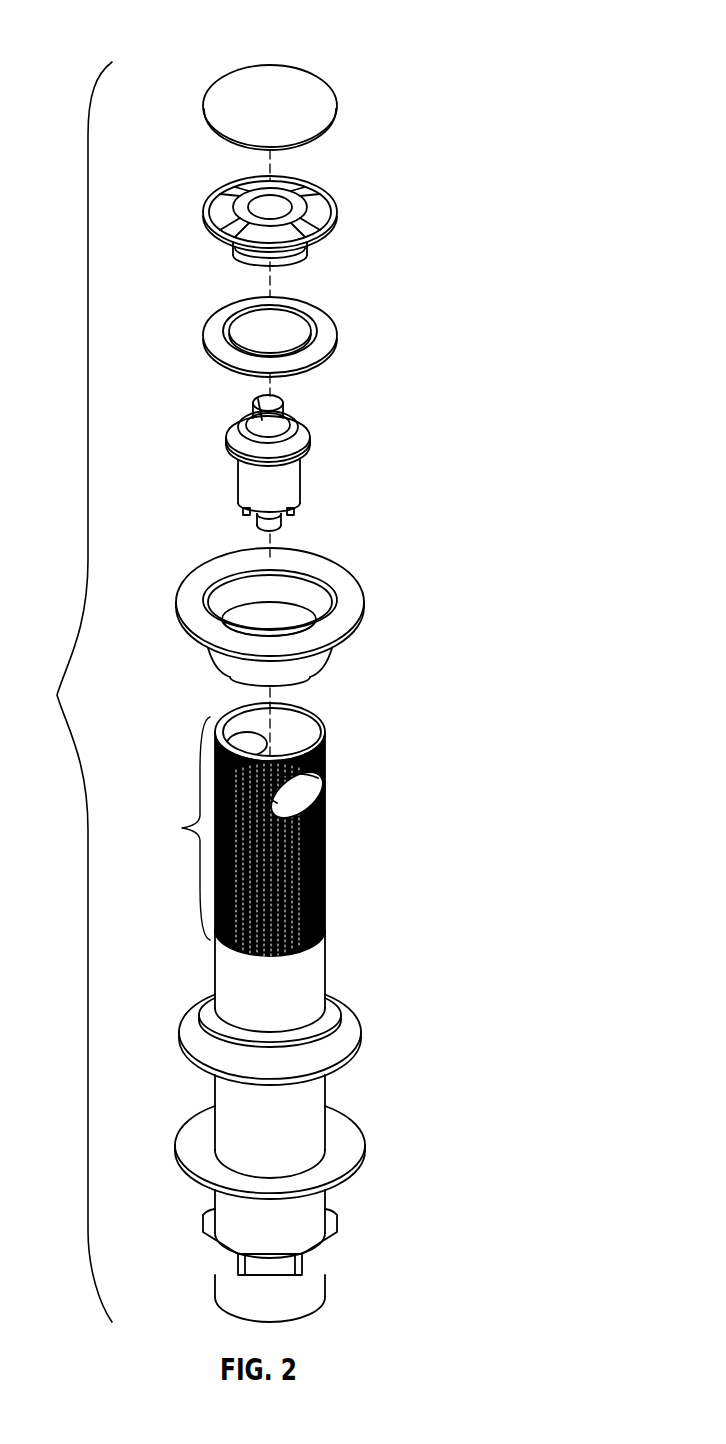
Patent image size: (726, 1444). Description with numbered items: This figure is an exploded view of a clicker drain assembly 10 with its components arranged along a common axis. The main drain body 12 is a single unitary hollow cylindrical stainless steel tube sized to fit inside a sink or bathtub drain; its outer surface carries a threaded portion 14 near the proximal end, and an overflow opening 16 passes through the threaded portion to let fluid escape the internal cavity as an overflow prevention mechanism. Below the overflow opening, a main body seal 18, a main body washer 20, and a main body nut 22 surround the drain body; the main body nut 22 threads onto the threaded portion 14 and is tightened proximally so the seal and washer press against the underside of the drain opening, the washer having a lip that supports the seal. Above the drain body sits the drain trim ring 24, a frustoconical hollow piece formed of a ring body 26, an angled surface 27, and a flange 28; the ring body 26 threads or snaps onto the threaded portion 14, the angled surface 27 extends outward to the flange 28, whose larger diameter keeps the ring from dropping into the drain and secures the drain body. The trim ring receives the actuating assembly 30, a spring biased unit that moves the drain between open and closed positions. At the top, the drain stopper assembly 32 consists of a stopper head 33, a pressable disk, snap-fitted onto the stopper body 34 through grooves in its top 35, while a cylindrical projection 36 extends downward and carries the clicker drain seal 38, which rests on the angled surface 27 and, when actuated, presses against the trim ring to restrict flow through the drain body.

The drain assembly 10 is at (432, 30).
The main drain body 12 is at (259, 1012).
The threaded portion 14 is at (182, 828).
The overflow opening 16 is at (308, 797).
The main body seal 18 is at (363, 1003).
The main body washer 20 is at (375, 1134).
The main body nut 22 is at (346, 1234).
The drain trim ring 24 is at (280, 611).
The ring body 26 is at (227, 663).
The angled surface 27 is at (220, 617).
The flange 28 is at (227, 570).
The actuating assembly 30 is at (323, 446).
The drain stopper assembly 32 is at (289, 172).
The stopper head 33 is at (316, 83).
The stopper body 34 is at (289, 228).
The top 35 is at (228, 200).
The projection 36 is at (237, 253).
The clicker drain seal 38 is at (341, 330).